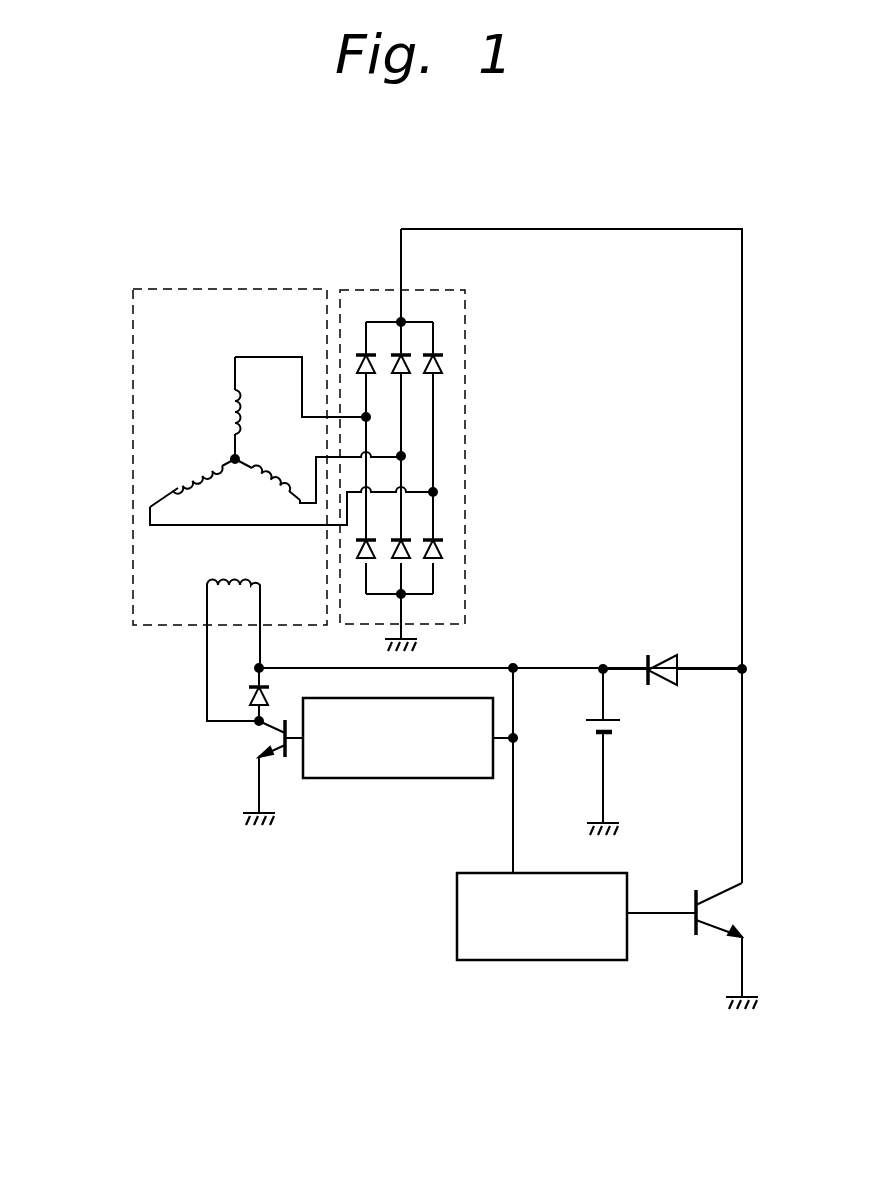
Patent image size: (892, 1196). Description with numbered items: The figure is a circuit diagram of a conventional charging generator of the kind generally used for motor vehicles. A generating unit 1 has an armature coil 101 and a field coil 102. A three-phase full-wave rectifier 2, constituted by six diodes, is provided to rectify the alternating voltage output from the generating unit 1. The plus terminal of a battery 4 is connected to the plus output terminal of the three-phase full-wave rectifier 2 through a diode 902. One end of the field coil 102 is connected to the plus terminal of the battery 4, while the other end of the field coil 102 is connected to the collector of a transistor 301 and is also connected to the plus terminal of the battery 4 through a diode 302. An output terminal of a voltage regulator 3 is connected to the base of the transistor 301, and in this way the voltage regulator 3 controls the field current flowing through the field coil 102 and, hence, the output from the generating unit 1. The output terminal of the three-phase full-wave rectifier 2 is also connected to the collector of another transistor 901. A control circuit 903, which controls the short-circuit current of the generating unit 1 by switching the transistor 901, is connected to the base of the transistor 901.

The generating unit 1 is at (176, 288).
The three-phase full-wave rectifier 2 is at (363, 290).
The voltage regulator 3 is at (365, 778).
The battery 4 is at (622, 726).
The armature coil 101 is at (222, 418).
The field coil 102 is at (202, 582).
The transistor 301 is at (258, 738).
The diode 302 is at (247, 695).
The transistor 901 is at (733, 911).
The diode 902 is at (665, 650).
The control circuit 903 is at (525, 960).